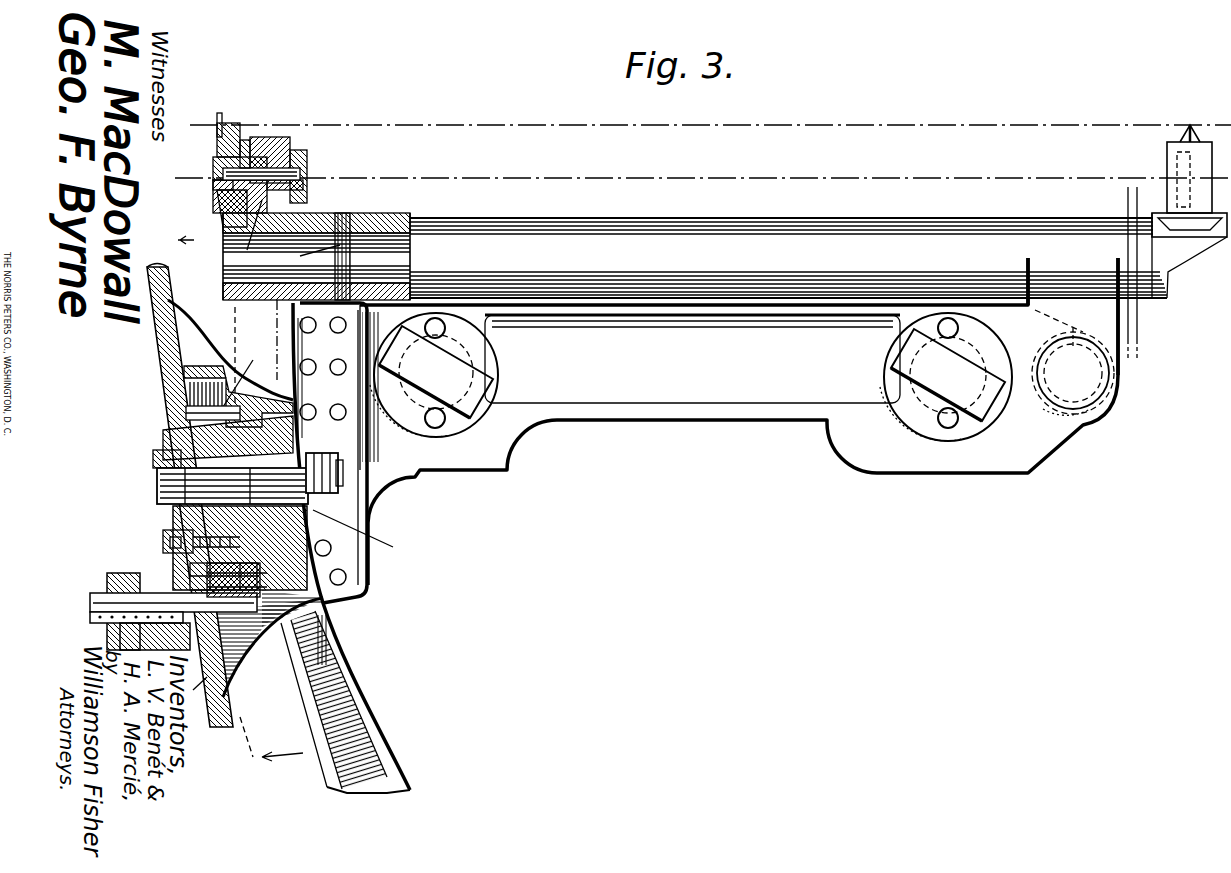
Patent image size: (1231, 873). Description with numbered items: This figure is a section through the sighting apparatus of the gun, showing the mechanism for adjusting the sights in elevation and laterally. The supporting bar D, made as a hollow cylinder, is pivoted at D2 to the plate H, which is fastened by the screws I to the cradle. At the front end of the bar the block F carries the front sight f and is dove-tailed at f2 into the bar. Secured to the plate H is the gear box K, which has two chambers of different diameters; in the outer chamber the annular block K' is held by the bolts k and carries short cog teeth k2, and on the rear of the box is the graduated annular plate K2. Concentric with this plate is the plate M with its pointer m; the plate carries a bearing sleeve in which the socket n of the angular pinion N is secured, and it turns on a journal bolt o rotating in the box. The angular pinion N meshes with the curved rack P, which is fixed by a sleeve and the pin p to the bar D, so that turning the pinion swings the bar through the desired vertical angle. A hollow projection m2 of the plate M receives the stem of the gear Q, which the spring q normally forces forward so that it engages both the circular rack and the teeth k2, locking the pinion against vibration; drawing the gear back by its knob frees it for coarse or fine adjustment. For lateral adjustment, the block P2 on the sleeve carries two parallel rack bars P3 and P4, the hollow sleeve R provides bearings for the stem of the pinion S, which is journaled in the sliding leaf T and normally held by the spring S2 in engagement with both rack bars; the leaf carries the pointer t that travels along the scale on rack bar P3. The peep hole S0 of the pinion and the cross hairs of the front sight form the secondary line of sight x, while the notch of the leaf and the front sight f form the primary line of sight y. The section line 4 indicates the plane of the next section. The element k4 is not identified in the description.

The supporting bar D is at (818, 255).
The pivot D2 is at (1087, 393).
The block F is at (1167, 150).
The front sight f is at (1190, 127).
The dove-tail f2 is at (1198, 224).
The plate H is at (739, 421).
The screws I is at (455, 370).
The angular pinion N is at (331, 453).
The curved rack P is at (360, 707).
The pin p is at (320, 260).
The block P2 is at (249, 235).
The rack bar P3 is at (227, 213).
The rack bar P4 is at (238, 160).
The hollow sleeve R is at (275, 157).
The pinion S is at (213, 165).
The spring S2 is at (290, 190).
The peep hole S0 is at (213, 183).
The sliding leaf T is at (217, 133).
The pointer t is at (221, 123).
The gear box K is at (165, 298).
The annular plate K2 is at (152, 315).
The bolts k is at (160, 366).
The cog teeth k2 is at (190, 398).
The catch k4 is at (280, 330).
The pointer m is at (153, 358).
The hollow projection m2 is at (155, 641).
The plate M is at (173, 513).
The socket n is at (250, 478).
The journal bolt o is at (361, 533).
The gear Q is at (219, 612).
The spring q is at (90, 600).
The secondary line of sight x is at (691, 178).
The primary line of sight y is at (700, 124).
The section line 4 is at (231, 504).